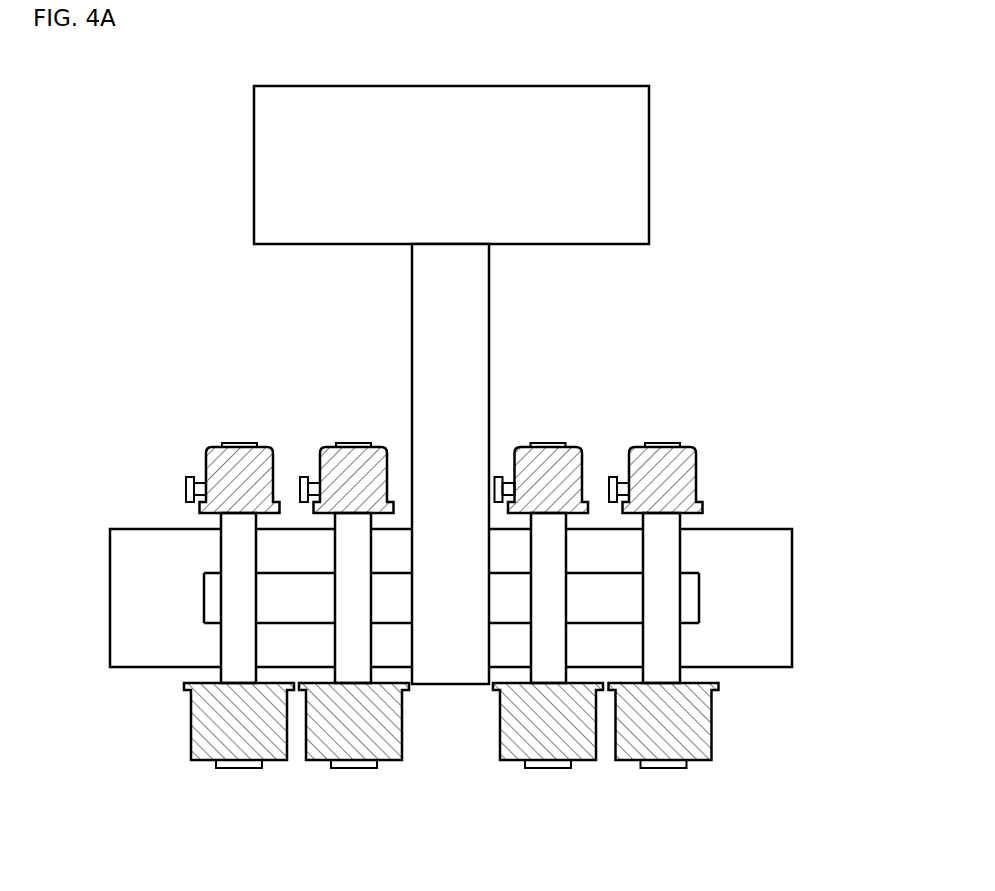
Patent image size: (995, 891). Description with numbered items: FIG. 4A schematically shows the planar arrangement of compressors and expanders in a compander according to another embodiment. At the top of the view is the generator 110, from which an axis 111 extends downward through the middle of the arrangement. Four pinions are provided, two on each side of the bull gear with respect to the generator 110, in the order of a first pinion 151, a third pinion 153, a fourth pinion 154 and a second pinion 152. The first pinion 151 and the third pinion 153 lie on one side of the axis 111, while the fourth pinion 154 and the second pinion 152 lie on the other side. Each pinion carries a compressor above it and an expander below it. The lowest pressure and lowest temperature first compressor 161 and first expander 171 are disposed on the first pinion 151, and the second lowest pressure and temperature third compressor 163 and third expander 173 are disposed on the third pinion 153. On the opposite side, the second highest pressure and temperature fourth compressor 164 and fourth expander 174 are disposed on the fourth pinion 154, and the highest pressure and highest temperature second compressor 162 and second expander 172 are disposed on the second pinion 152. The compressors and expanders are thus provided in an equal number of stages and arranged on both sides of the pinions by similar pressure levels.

The generator 110 is at (633, 165).
The axis 111 is at (475, 355).
The first pinion 151 is at (233, 638).
The second pinion 152 is at (667, 638).
The third pinion 153 is at (351, 660).
The fourth pinion 154 is at (545, 647).
The first compressor 161 is at (215, 445).
The second compressor 162 is at (685, 447).
The third compressor 163 is at (332, 445).
The fourth compressor 164 is at (567, 447).
The first expander 171 is at (208, 762).
The second expander 172 is at (692, 760).
The third expander 173 is at (322, 762).
The fourth expander 174 is at (578, 760).